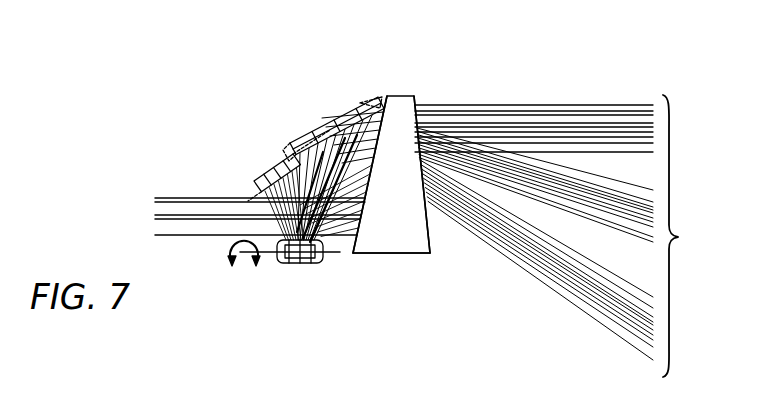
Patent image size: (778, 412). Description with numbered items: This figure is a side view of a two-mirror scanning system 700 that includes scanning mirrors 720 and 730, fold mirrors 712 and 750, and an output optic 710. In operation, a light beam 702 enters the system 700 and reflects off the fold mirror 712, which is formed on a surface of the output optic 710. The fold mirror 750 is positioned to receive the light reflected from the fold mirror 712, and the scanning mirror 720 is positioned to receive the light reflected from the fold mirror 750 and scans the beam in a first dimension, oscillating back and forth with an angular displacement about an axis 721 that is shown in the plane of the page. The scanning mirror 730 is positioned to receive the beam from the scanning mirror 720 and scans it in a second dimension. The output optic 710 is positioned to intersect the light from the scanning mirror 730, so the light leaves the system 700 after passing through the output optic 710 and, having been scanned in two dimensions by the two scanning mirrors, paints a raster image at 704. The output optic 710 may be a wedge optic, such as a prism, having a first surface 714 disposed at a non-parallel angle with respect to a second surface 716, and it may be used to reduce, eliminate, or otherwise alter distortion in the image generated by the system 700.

The two-mirror scanning system 700 is at (141, 88).
The light beam 702 is at (185, 240).
The raster image 704 is at (686, 237).
The output optic 710 is at (386, 163).
The fold mirror 712 is at (366, 206).
The first surface 714 is at (383, 97).
The second surface 716 is at (417, 100).
The scanning mirror 720 is at (293, 265).
The axis 721 is at (338, 255).
The scanning mirror 730 is at (333, 127).
The fold mirror 750 is at (267, 172).